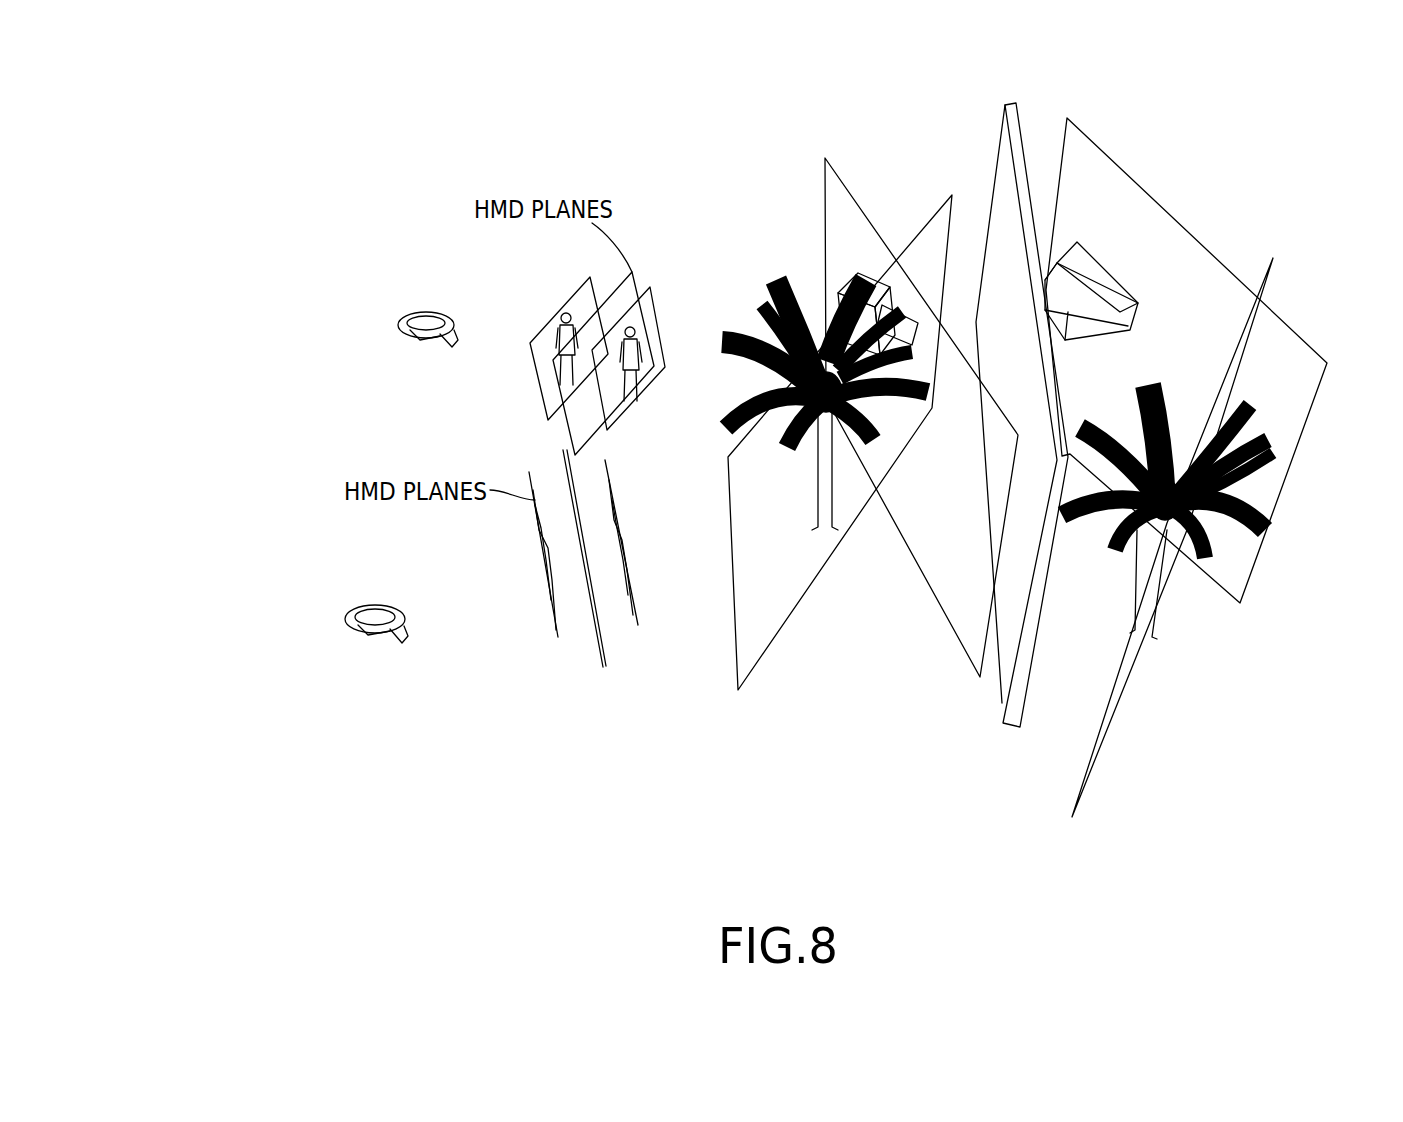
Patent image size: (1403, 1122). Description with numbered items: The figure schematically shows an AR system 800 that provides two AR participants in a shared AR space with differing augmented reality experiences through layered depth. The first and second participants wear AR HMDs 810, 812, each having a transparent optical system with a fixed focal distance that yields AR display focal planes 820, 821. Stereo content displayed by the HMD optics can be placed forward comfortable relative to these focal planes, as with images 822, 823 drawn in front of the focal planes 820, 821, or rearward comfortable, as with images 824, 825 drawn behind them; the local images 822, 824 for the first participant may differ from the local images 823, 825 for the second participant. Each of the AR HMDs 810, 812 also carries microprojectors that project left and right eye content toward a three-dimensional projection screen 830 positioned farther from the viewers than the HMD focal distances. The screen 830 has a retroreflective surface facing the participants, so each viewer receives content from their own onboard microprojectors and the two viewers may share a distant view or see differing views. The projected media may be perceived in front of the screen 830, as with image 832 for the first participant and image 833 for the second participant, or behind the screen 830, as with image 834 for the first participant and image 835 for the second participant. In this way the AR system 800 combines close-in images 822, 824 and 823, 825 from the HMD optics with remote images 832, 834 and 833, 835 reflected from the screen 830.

The AR system 800 is at (312, 247).
The AR HMD 810 is at (398, 331).
The AR HMD 812 is at (347, 627).
The AR display focal plane 820 is at (646, 262).
The AR display focal plane 821 is at (593, 672).
The image 822 is at (573, 274).
The image 823 is at (547, 644).
The image 824 is at (666, 292).
The image 825 is at (646, 639).
The 3D projection screen 830 is at (988, 713).
The image 832 is at (738, 692).
The image 833 is at (826, 158).
The image 834 is at (1050, 832).
The image 835 is at (1133, 178).